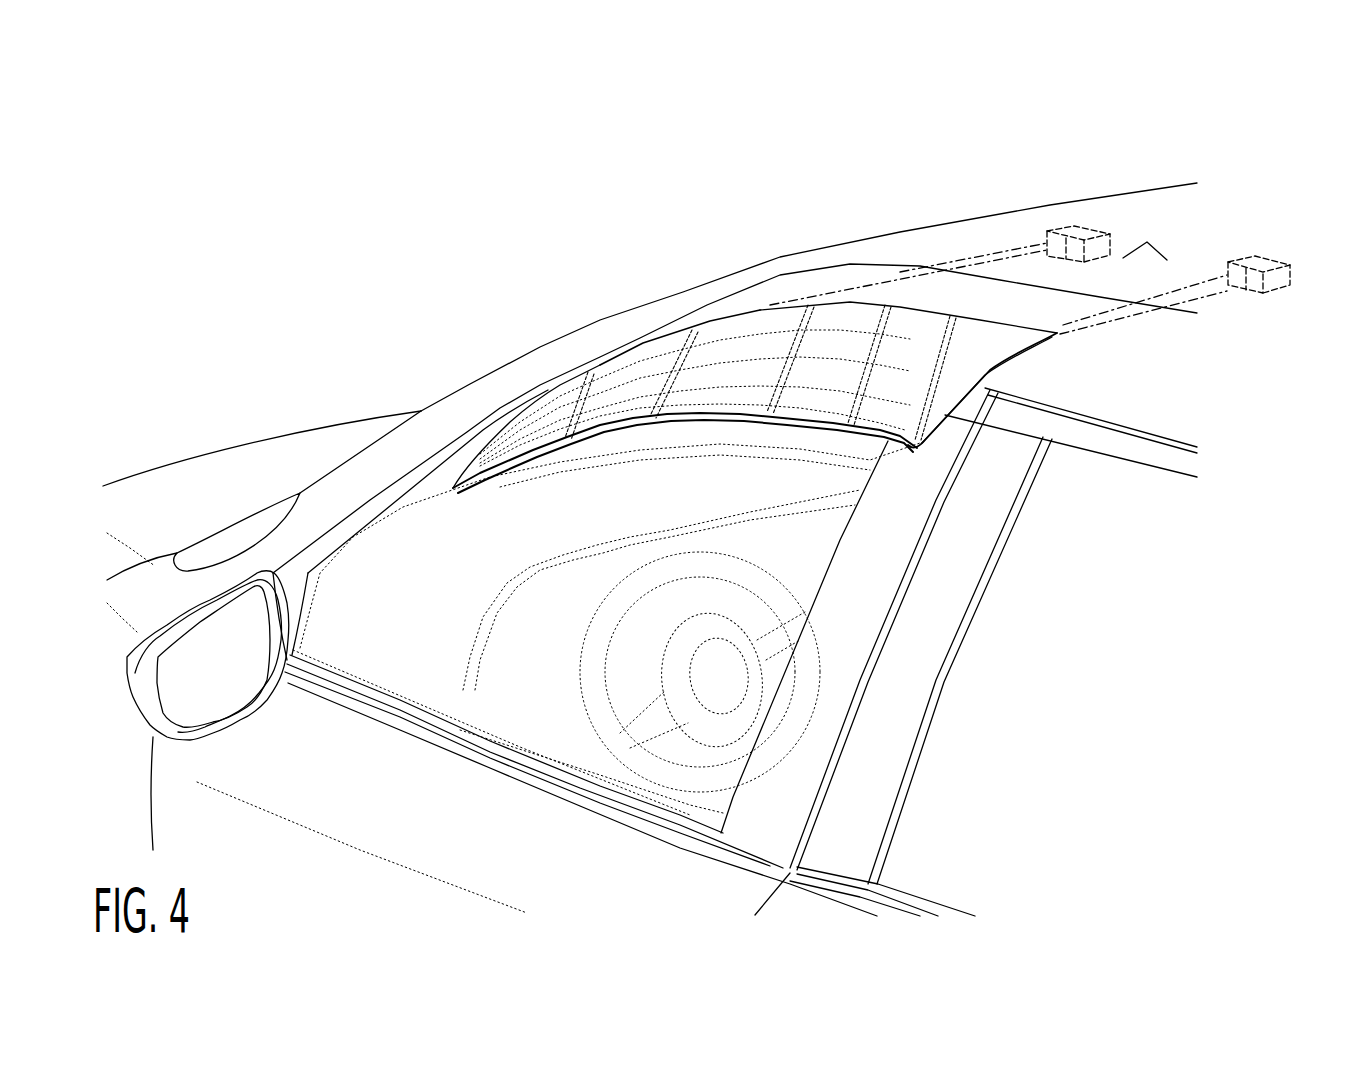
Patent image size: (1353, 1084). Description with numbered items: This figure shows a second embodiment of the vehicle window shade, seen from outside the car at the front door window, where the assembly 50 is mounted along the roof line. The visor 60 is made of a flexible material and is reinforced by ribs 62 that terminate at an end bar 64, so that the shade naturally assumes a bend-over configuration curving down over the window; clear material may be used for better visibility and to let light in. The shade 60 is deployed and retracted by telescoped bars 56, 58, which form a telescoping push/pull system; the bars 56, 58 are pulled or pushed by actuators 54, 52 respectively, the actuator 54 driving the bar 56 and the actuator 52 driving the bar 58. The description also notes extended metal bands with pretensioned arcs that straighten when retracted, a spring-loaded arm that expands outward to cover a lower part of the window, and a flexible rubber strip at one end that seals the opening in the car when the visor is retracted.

The sun visor assembly 50 is at (1187, 158).
The actuator 52 is at (1097, 169).
The actuator 54 is at (1269, 216).
The telescoped bar 56 is at (1162, 347).
The telescoped bar 58 is at (908, 190).
The visor 60 is at (819, 465).
The ribs 62 is at (756, 313).
The end bar 64 is at (678, 376).